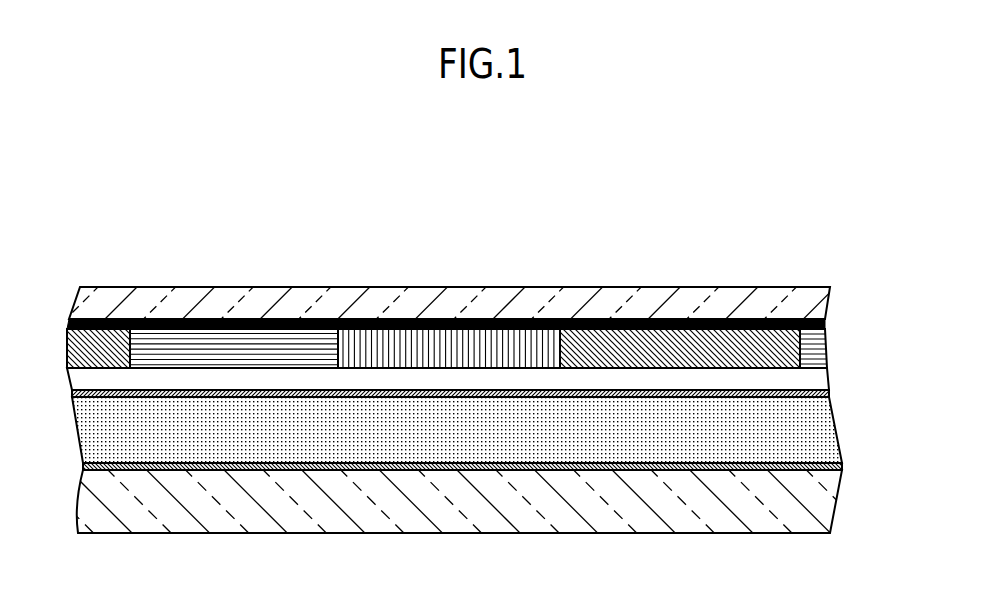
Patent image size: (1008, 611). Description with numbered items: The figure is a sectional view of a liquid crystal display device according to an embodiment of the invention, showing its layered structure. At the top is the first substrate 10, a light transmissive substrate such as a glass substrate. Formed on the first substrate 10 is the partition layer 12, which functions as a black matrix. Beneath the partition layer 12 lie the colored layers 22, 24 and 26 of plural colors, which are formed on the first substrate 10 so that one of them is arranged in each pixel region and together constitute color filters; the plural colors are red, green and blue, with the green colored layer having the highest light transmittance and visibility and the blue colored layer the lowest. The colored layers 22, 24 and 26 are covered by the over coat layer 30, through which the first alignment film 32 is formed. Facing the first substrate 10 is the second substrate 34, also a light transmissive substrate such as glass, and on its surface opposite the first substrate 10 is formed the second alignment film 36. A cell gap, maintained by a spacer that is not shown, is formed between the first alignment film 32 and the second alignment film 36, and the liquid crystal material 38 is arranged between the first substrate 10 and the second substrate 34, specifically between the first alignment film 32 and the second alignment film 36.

The first substrate 10 is at (818, 303).
The partition layer 12 is at (818, 326).
The colored layer 22 is at (447, 345).
The colored layer 24 is at (670, 345).
The colored layer 26 is at (210, 340).
The over coat layer 30 is at (820, 378).
The first alignment film 32 is at (823, 394).
The second substrate 34 is at (833, 495).
The second alignment film 36 is at (838, 466).
The liquid crystal material 38 is at (836, 430).